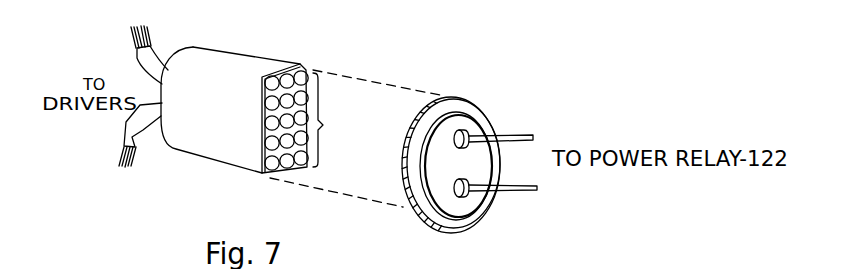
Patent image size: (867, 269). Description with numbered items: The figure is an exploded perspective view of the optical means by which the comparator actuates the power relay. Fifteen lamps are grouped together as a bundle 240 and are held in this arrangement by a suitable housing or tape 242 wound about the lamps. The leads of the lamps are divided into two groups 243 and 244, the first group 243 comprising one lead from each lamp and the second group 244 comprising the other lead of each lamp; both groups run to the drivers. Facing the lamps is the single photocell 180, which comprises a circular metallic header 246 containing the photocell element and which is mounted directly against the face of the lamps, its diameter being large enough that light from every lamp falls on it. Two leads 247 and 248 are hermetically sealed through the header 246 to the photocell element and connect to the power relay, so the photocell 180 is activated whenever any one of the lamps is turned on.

The photocell 180 is at (474, 155).
The group of lamps 240 is at (346, 74).
The tape 242 is at (274, 43).
The group of lamp leads 243 is at (133, 56).
The group of lamp leads 244 is at (130, 132).
The circular metallic header 246 is at (468, 223).
The lead 247 is at (541, 121).
The lead 248 is at (545, 171).